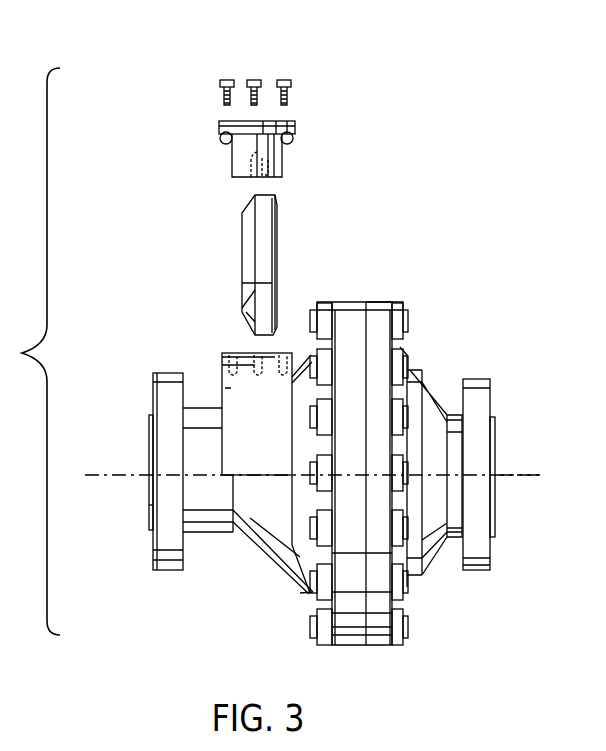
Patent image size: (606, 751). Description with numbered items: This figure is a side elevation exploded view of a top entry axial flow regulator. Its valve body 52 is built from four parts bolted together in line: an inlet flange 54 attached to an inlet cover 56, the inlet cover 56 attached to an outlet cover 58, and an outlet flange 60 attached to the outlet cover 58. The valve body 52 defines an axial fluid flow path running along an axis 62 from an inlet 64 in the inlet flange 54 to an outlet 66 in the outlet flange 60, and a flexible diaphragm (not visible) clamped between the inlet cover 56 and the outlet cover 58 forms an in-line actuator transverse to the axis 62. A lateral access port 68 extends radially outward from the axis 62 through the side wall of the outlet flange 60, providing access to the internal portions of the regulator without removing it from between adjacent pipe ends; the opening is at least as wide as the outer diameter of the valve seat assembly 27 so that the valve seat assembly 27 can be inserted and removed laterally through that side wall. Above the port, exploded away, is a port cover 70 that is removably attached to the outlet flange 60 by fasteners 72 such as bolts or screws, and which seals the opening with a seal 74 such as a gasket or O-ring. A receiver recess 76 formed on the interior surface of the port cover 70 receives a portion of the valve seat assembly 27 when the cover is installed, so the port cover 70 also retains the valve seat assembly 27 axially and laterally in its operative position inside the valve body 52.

The valve seat assembly 27 is at (242, 258).
The valve body 52 is at (266, 565).
The inlet flange 54 is at (425, 378).
The inlet cover 56 is at (378, 303).
The outlet cover 58 is at (348, 303).
The outlet flange 60 is at (160, 373).
The axis 62 is at (514, 480).
The inlet 64 is at (496, 436).
The outlet 66 is at (153, 505).
The lateral access port 68 is at (240, 352).
The port cover 70 is at (297, 124).
The fasteners 72 is at (286, 78).
The seal 74 is at (220, 140).
The receiver recess 76 is at (281, 168).